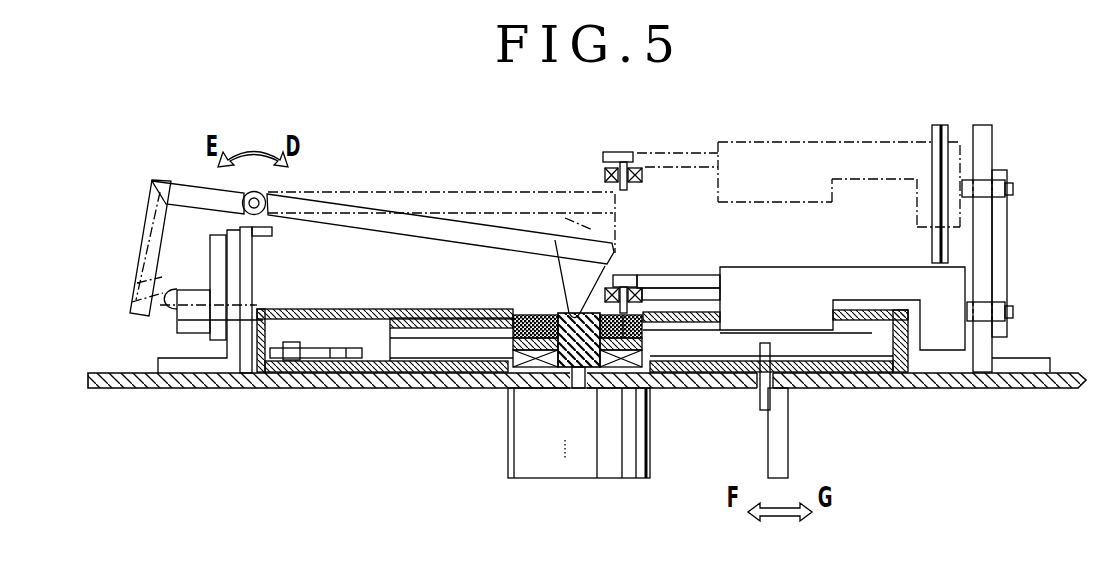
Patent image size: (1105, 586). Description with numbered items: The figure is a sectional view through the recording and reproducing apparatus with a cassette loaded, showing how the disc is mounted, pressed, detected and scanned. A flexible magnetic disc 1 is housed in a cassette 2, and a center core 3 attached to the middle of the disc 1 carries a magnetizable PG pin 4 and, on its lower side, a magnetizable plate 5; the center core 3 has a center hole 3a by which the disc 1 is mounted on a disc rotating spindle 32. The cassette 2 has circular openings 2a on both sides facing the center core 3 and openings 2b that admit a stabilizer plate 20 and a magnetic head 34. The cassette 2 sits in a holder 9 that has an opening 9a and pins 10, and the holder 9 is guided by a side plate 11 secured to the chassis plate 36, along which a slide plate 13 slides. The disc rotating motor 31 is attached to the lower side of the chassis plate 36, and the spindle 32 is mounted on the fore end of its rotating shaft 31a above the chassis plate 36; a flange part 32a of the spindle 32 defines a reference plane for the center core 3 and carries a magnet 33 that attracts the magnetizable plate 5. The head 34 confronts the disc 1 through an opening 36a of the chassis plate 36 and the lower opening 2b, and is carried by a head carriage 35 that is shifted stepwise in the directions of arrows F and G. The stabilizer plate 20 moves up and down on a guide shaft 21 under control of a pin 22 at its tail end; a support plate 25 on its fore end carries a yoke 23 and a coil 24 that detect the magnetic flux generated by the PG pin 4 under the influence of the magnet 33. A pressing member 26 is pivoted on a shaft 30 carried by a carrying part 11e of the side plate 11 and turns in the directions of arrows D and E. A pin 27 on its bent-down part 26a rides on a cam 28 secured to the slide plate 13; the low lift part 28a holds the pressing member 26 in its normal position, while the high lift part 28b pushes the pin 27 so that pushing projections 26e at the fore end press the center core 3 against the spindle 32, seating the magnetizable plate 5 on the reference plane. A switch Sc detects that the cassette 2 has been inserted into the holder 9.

The flexible magnetic disc 1 is at (740, 375).
The cassette 2 is at (440, 313).
The circular openings 2a is at (507, 313).
The openings 2b is at (713, 308).
The center core 3 is at (527, 313).
The center hole 3a is at (558, 310).
The PG pin 4 is at (653, 273).
The magnetizable plate 5 is at (465, 343).
The holder 9 is at (353, 307).
The opening of the holder 9a is at (420, 310).
The pins 10 is at (243, 389).
The side plate 11 is at (230, 273).
The carrying part 11e is at (270, 228).
The slide plate 13 is at (212, 238).
The stabilizer plate 20 is at (782, 277).
The guide shaft 21 is at (950, 125).
The pin 22 is at (1013, 307).
The yoke 23 is at (627, 280).
The coil 24 is at (643, 293).
The support plate 25 is at (697, 280).
The pressing member 26 is at (487, 233).
The bent-down part 26a is at (143, 217).
The pushing projections 26e is at (573, 277).
The pin 27 is at (160, 277).
The cam 28 is at (193, 337).
The low lift part 28a is at (193, 292).
The high lift part 28b is at (177, 328).
The shaft 30 is at (264, 192).
The disc rotating motor 31 is at (613, 467).
The rotating shaft 31a is at (583, 467).
The disc rotating spindle 32 is at (565, 390).
The flange part 32a is at (648, 428).
The magnet 33 is at (537, 372).
The recording and/or reproducing head 34 is at (783, 348).
The head carriage 35 is at (782, 445).
The chassis plate 36 is at (1058, 390).
The opening 36a is at (813, 378).
The switch Sc is at (283, 392).